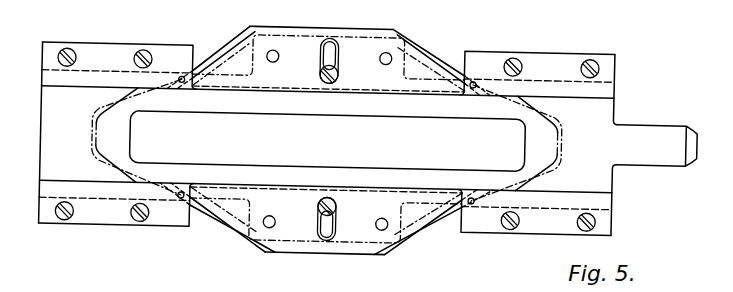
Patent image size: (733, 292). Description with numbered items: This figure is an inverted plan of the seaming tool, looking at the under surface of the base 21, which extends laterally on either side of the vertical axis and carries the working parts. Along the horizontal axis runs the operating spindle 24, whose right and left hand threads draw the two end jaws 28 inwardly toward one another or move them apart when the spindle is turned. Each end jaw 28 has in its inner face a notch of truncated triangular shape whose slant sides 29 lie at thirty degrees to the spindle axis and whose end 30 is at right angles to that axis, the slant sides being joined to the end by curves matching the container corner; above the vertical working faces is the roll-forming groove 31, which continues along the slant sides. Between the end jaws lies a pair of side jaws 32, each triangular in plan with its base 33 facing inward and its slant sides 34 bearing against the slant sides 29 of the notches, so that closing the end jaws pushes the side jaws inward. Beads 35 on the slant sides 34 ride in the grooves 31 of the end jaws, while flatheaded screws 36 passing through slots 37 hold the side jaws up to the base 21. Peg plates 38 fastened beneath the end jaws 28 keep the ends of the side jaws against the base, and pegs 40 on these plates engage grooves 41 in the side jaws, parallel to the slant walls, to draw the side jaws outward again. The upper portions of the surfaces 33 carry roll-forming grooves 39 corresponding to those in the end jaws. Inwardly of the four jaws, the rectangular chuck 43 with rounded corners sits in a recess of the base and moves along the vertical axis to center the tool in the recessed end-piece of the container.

The base 21 is at (102, 134).
The operating spindle 24 is at (657, 146).
The end jaws 28 is at (614, 102).
The slant sides of the notch 29 is at (124, 184).
The end of the notch 30 is at (94, 129).
The roll-forming groove 31 is at (110, 174).
The side jaws 32 is at (294, 50).
The bases of the triangles 33 is at (360, 95).
The slant sides 34 is at (236, 40).
The beads 35 is at (210, 58).
The flatheaded screws 36 is at (339, 70).
The slots 37 is at (328, 38).
The peg plates 38 is at (122, 52).
The roll-forming grooves 39 is at (321, 90).
The pegs 40 is at (178, 80).
The grooves 41 is at (259, 30).
The chuck 43 is at (265, 137).